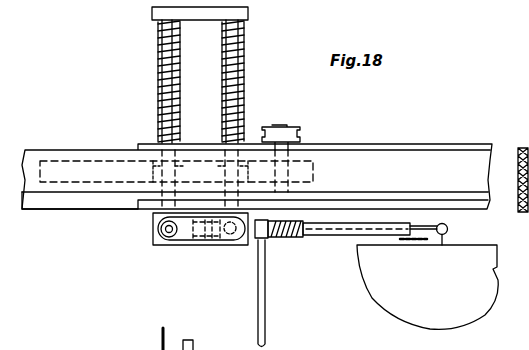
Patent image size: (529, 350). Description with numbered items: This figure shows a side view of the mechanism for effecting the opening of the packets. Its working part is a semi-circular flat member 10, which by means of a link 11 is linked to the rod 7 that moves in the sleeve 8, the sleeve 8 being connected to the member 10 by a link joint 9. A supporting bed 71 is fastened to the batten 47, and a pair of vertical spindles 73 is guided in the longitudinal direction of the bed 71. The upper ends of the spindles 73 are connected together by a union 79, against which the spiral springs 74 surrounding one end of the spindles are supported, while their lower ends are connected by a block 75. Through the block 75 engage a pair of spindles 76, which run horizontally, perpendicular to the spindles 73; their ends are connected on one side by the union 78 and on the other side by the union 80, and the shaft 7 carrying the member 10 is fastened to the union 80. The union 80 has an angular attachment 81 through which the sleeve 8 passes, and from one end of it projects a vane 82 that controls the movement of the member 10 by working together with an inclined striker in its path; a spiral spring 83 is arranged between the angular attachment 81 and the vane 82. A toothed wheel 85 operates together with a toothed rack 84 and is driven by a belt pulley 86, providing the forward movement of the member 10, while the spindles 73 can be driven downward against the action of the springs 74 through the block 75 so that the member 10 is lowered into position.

The rod 7 is at (432, 227).
The sleeve 8 is at (342, 235).
The link joint 9 is at (410, 242).
The semi-circular flat member 10 is at (410, 318).
The link 11 is at (448, 230).
The batten 47 is at (424, 150).
The supporting bed 71 is at (140, 207).
The spindles 73 is at (222, 104).
The spiral springs 74 is at (222, 60).
The block 75 is at (153, 240).
The spindles 76 is at (207, 238).
The union 78 is at (166, 238).
The union 79 is at (152, 14).
The union 80 is at (226, 236).
The angular attachment 81 is at (305, 239).
The vane 82 is at (271, 325).
The spiral spring 83 is at (276, 240).
The toothed rack 84 is at (107, 170).
The toothed wheel 85 is at (312, 157).
The belt pulley 86 is at (290, 127).